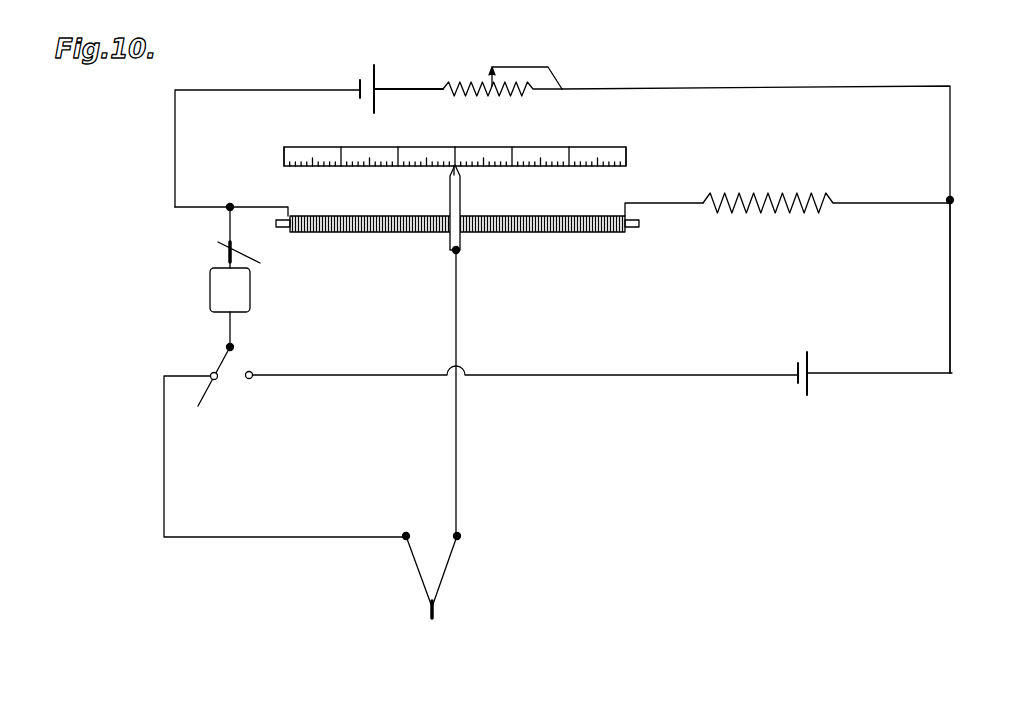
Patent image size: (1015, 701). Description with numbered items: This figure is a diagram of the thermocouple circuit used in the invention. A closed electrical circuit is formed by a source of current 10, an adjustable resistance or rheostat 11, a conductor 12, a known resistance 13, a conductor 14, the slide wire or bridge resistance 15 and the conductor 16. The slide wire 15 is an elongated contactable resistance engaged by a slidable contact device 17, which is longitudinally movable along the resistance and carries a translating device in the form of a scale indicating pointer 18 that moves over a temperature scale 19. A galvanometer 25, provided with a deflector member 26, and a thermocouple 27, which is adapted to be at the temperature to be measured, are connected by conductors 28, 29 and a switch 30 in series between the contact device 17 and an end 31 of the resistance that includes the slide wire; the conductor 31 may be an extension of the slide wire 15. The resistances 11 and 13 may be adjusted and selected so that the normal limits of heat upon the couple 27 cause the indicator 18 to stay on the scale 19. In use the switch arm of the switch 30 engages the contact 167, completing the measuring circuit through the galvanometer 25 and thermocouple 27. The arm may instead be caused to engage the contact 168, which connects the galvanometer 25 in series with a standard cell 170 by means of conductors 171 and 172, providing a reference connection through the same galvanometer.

The source of current 10 is at (375, 74).
The adjustable resistance or rheostat 11 is at (491, 80).
The conductor 12 is at (803, 87).
The known resistance 13 is at (779, 182).
The conductor 14 is at (663, 203).
The slide wire or bridge resistance 15 is at (554, 235).
The conductor 16 is at (175, 152).
The slidable contact device 17 is at (460, 242).
The scale indicating pointer 18 is at (452, 172).
The temperature scale 19 is at (483, 148).
The galvanometer 25 is at (254, 289).
The deflector member 26 is at (246, 237).
The thermocouple 27 is at (445, 572).
The conductor 28 is at (459, 458).
The conductor 29 is at (164, 481).
The switch 30 is at (223, 380).
The end of the resistance 31 is at (291, 212).
The contact 167 is at (195, 405).
The contact 168 is at (252, 379).
The standard cell 170 is at (808, 381).
The conductor 171 is at (962, 252).
The conductor 172 is at (718, 374).